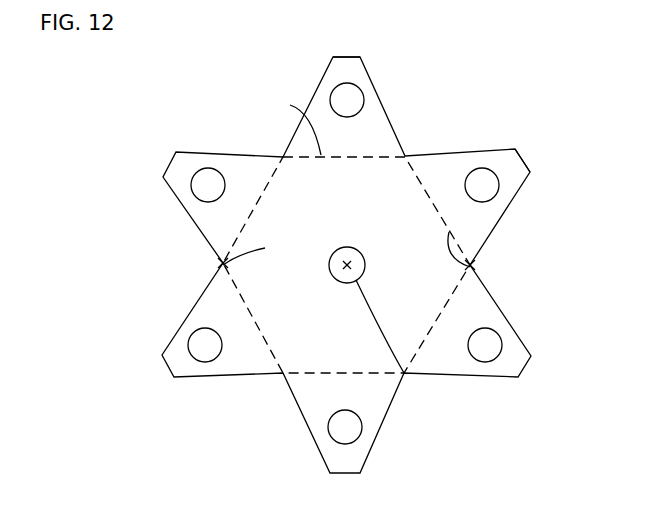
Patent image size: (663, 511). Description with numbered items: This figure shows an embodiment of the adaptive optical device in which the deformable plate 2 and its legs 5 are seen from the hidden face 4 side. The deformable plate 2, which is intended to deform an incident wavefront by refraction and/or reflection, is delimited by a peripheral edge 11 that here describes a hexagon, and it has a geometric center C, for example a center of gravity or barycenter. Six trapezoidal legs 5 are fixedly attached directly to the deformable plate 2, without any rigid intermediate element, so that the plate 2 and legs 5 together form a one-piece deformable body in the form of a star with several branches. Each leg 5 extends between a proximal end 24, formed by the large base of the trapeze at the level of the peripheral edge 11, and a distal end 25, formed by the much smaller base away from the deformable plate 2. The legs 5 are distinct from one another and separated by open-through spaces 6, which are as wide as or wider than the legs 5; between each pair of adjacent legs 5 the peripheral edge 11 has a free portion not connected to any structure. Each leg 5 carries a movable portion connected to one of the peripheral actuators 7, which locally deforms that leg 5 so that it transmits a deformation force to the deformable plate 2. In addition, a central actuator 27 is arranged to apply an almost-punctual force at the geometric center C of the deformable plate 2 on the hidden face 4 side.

The deformable plate 2 is at (288, 182).
The hidden face 4 is at (226, 265).
The legs 5 is at (374, 82).
The spaces 6 is at (437, 106).
The peripheral actuators 7 is at (347, 100).
The peripheral edge 11 is at (472, 266).
The proximal end 24 is at (517, 227).
The distal end 25 is at (347, 57).
The central actuator 27 is at (400, 370).
The geometric center C is at (349, 264).